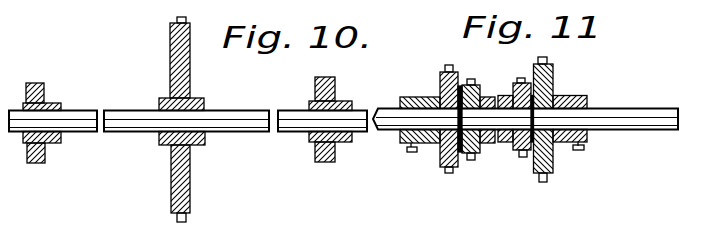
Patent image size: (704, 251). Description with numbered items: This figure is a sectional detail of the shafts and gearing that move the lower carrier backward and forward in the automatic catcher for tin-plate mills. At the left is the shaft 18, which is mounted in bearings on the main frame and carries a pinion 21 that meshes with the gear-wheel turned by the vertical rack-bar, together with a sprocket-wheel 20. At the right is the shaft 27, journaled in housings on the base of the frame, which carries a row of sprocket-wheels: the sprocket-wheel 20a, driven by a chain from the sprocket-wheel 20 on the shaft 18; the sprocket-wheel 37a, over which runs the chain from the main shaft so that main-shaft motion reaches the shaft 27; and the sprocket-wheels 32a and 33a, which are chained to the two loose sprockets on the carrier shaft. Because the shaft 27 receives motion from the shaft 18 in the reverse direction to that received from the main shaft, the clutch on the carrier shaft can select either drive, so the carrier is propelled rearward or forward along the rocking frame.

In FIG. 10, the shaft 18 is at (127, 110).
In FIG. 10, the sprocket-wheel 20 is at (190, 78).
In FIG. 10, the pinion 21 is at (47, 156).
In FIG. 11, the shaft 27 is at (623, 108).
In FIG. 11, the sprocket-wheel 20a is at (472, 160).
In FIG. 11, the sprocket-wheel 32a is at (545, 182).
In FIG. 11, the sprocket-wheel 33a is at (450, 172).
In FIG. 11, the sprocket-wheel 37a is at (520, 151).